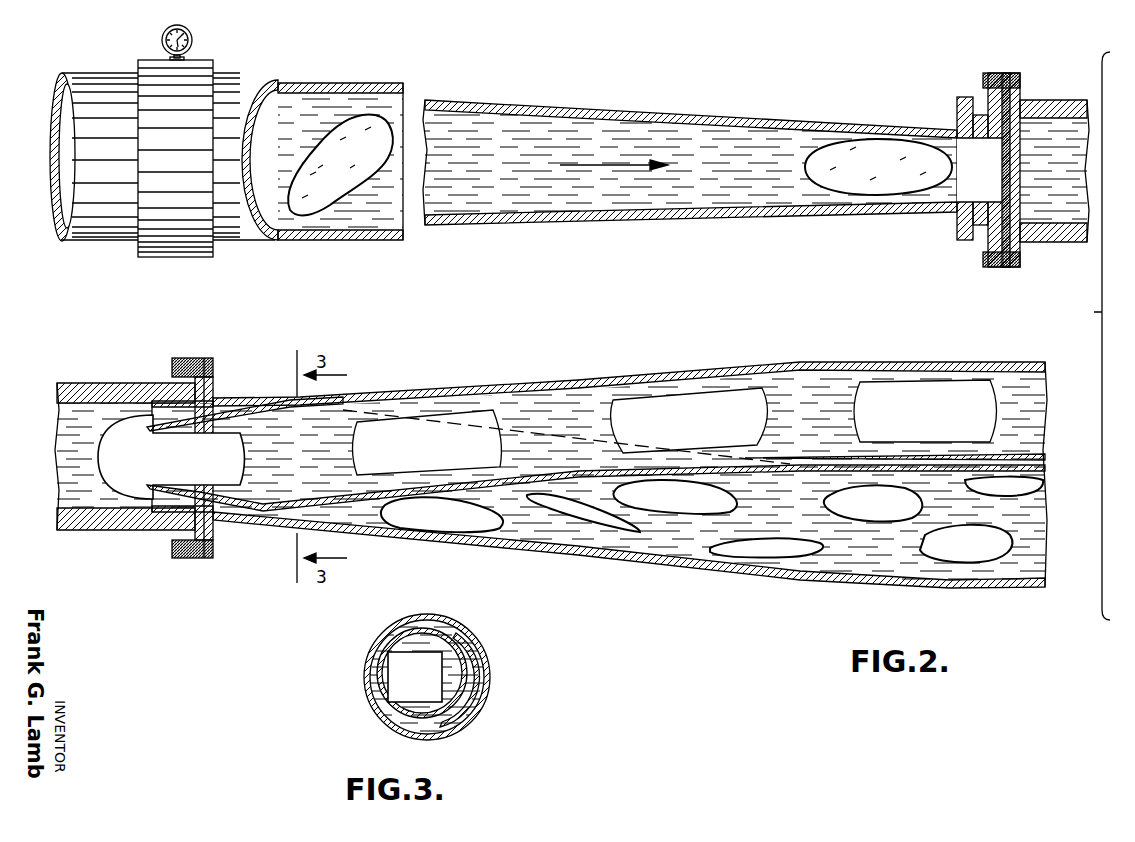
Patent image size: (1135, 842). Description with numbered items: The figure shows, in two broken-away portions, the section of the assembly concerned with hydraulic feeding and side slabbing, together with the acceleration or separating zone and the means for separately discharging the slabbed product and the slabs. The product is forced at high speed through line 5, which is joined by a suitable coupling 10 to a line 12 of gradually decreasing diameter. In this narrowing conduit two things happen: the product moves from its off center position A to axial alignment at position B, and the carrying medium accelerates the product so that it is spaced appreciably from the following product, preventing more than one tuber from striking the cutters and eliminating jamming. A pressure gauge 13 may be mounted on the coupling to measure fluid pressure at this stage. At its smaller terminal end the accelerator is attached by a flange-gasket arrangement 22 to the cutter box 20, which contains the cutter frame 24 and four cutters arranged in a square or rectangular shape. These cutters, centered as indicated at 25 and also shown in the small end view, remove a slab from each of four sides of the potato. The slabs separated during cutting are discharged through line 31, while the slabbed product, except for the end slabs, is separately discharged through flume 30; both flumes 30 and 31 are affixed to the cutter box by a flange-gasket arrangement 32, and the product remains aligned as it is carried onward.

In FIG. 2, the line 5 is at (88, 75).
In FIG. 2, the coupling 10 is at (205, 68).
In FIG. 2, the pressure gauge 13 is at (192, 36).
In FIG. 2, the line of gradually decreasing diameter 12 is at (560, 104).
In FIG. 2, the off center position A is at (316, 210).
In FIG. 2, the axial alignment position B is at (905, 188).
In FIG. 2, the flange-gasket arrangement 22 is at (1030, 80).
In FIG. 2, the cutter box 20 is at (1080, 238).
In FIG. 2, the flange-gasket arrangement 32 is at (220, 352).
In FIG. 2, the cutter frame 24 is at (160, 400).
In FIG. 2, the cutters 25 is at (160, 428).
In FIG. 3, the cutters 25 is at (437, 650).
In FIG. 2, the flume 30 is at (690, 376).
In FIG. 2, the line 31 is at (686, 566).